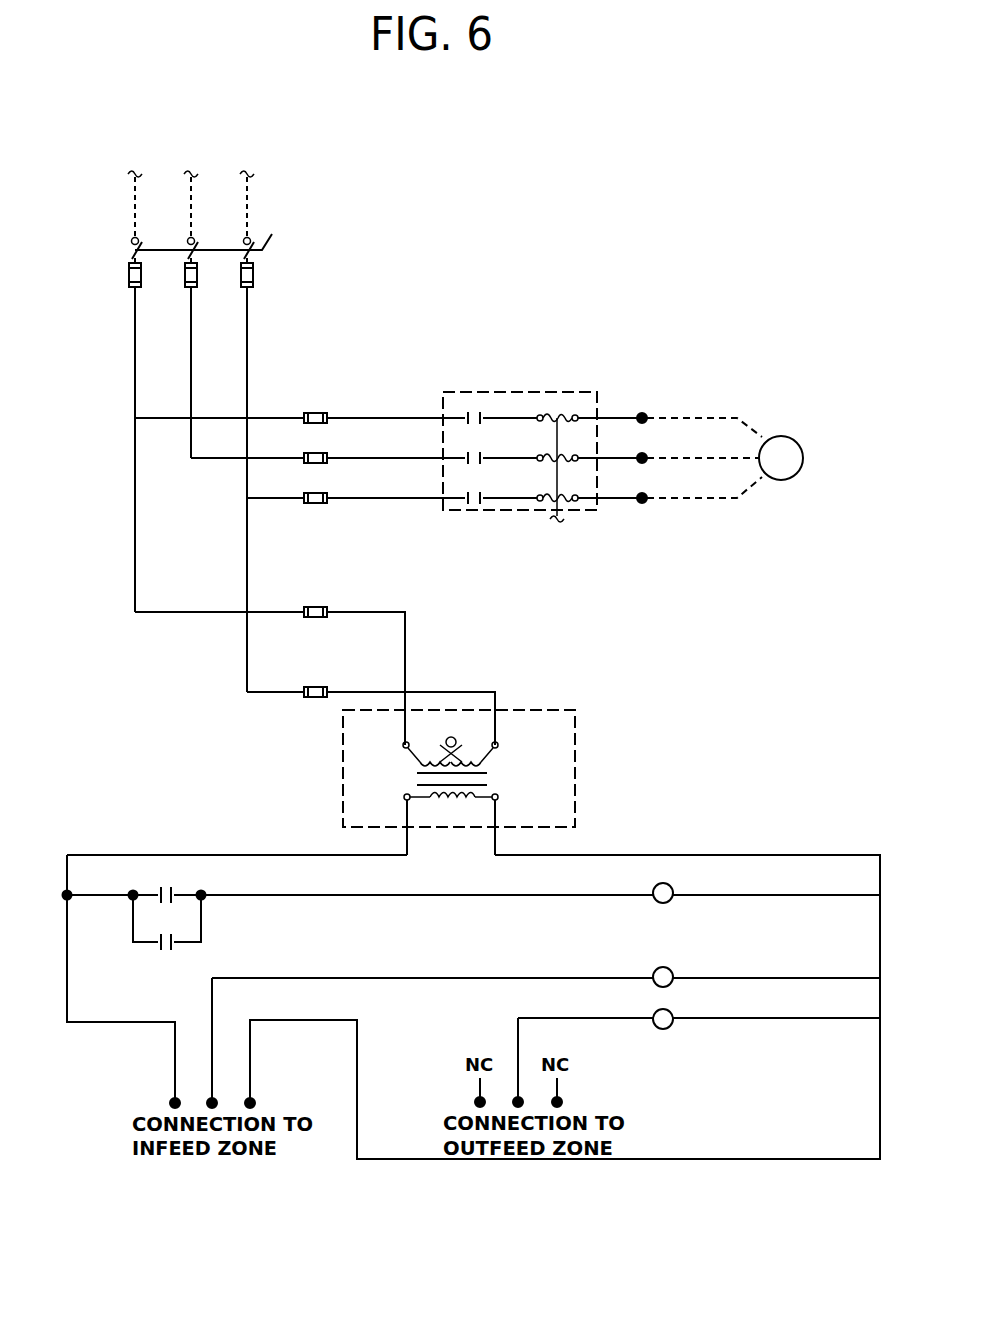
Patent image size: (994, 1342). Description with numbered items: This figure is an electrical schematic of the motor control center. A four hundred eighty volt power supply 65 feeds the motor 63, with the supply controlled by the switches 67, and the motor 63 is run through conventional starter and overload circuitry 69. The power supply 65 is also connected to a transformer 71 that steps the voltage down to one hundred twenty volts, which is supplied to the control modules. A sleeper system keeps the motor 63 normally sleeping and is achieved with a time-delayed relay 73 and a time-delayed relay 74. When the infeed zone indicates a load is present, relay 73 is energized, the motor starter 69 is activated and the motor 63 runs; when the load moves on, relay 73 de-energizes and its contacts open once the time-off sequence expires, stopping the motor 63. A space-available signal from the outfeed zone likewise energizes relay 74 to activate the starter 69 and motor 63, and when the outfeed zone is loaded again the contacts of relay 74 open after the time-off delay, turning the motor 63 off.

The motor 63 is at (777, 390).
The 480 volt power supply 65 is at (335, 130).
The switches 67 is at (290, 277).
The starter and overload circuitry 69 is at (480, 382).
The transformer 71 is at (595, 717).
The time-delayed relay 73 is at (185, 885).
The time-delayed relay 74 is at (150, 950).